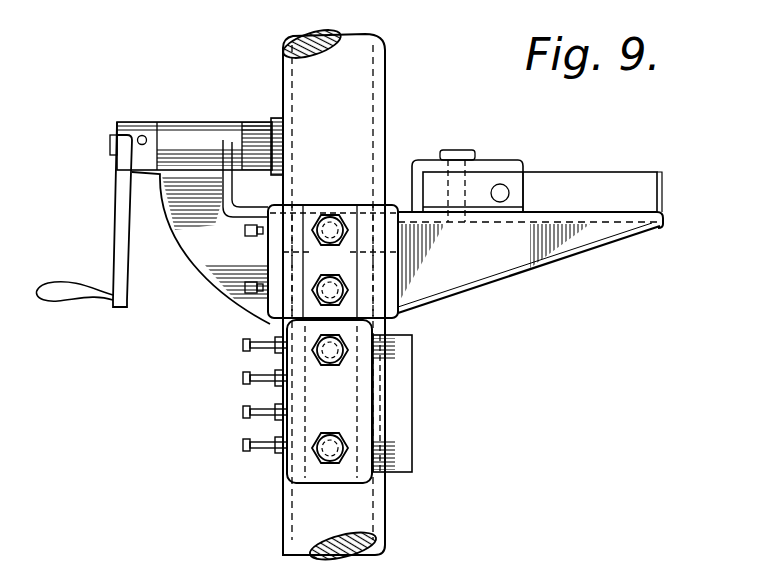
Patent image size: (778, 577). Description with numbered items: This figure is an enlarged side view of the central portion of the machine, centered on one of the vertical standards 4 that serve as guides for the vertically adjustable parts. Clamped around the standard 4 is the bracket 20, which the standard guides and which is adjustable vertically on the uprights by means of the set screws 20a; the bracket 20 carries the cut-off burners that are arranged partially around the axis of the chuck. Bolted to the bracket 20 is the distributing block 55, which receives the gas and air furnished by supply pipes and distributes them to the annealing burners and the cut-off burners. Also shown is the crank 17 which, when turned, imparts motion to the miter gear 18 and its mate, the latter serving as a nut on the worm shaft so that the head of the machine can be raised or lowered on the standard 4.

The standard 4 is at (380, 137).
The crank 17 is at (140, 238).
The miter gear 18 is at (277, 118).
The bracket 20 is at (483, 270).
The set screw 20a is at (250, 237).
The distributing block 55 is at (327, 401).